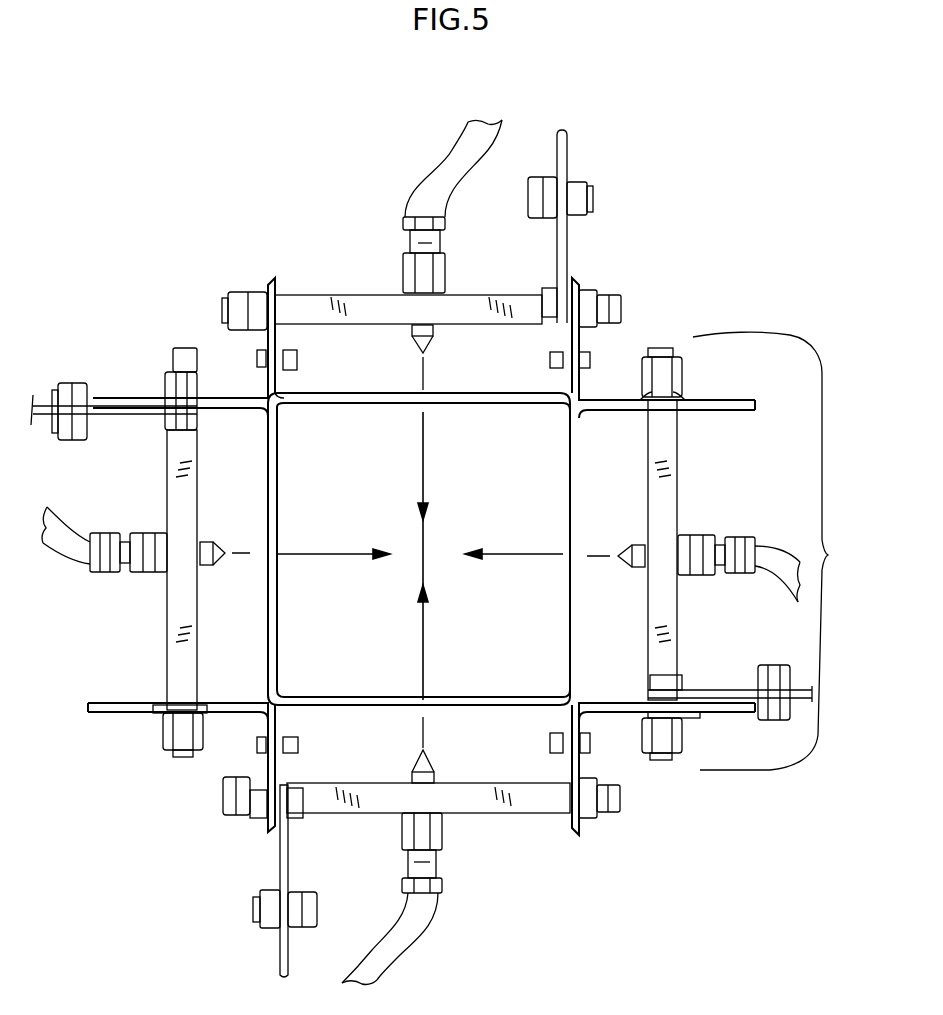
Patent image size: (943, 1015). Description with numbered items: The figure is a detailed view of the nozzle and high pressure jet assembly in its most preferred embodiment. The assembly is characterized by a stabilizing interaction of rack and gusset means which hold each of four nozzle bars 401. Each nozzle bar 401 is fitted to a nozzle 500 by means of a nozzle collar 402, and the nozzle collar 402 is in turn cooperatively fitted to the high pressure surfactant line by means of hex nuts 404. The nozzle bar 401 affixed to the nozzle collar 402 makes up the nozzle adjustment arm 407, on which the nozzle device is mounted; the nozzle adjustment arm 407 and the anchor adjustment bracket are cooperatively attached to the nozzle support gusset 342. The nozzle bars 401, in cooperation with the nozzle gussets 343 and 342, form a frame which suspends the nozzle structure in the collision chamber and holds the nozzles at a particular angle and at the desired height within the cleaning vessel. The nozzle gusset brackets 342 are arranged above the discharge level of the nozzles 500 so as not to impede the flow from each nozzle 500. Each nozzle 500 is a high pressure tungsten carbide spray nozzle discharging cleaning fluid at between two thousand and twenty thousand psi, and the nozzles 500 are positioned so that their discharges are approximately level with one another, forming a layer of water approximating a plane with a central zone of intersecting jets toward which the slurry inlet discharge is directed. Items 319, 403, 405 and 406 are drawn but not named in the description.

The fitting 319 is at (795, 510).
The nozzle support gusset 342 is at (583, 660).
The nozzle gusset 343 is at (280, 863).
The nozzle bar 401 is at (303, 312).
The nozzle collar 402 is at (118, 567).
The fitting 403 is at (140, 535).
The hex nuts 404 is at (163, 723).
The nut 405 is at (590, 360).
The tube 406 is at (400, 933).
The nozzle adjustment arm 407 is at (782, 551).
The nozzle 500 is at (225, 545).